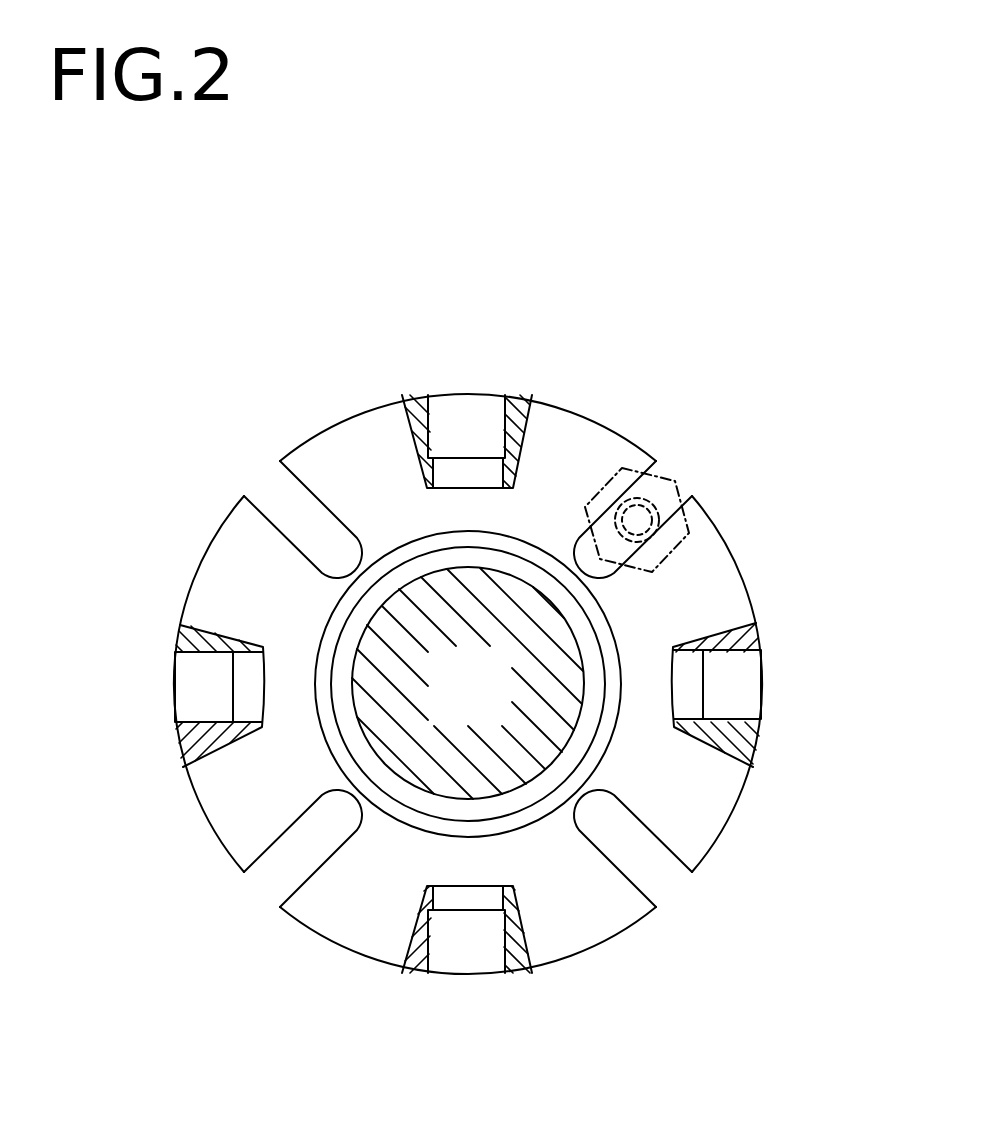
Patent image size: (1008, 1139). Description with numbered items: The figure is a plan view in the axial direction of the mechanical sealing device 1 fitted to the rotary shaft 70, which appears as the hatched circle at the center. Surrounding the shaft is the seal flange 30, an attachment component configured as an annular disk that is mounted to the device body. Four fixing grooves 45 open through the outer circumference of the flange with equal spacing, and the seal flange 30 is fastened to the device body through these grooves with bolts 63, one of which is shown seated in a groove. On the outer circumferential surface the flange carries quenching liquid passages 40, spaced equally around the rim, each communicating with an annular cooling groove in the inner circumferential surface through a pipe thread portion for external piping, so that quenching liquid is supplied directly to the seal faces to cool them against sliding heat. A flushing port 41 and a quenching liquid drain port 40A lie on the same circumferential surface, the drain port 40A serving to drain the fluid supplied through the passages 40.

The mechanical sealing device 1 is at (725, 334).
The seal flange 30 is at (569, 407).
The quenching liquid passage 40 is at (473, 392).
The quenching liquid drain port 40A is at (468, 973).
The flushing port 41 is at (766, 678).
The fixing groove 45 is at (264, 525).
The bolt 63 is at (683, 556).
The rotary shaft 70 is at (492, 703).